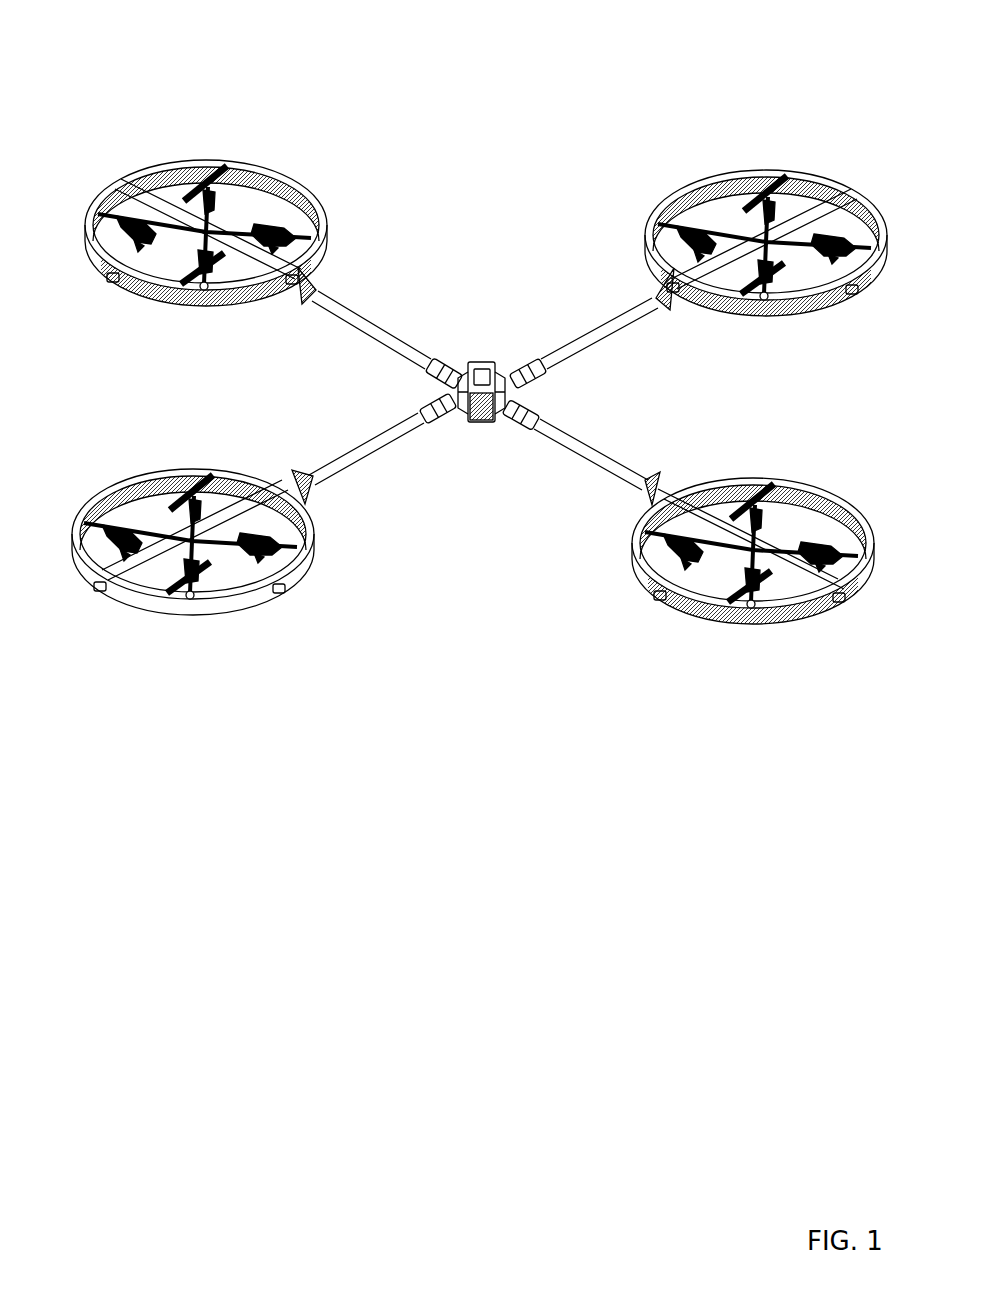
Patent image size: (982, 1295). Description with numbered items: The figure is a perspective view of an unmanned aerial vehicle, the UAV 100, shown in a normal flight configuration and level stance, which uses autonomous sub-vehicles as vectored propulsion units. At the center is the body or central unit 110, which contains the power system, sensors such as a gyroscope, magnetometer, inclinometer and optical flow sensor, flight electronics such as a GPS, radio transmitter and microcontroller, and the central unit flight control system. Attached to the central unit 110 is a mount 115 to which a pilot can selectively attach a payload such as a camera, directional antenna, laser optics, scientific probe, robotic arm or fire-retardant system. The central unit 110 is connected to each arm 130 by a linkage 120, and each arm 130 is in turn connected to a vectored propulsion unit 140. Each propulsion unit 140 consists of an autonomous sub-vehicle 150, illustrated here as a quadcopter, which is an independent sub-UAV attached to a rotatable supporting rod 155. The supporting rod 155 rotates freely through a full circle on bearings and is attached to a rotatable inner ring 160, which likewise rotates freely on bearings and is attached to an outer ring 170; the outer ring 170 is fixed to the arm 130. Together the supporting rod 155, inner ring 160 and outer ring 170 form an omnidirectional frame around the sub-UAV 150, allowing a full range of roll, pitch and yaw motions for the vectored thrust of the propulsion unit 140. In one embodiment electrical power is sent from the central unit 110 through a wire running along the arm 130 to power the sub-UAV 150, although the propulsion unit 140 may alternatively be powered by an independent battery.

The UAV 100 is at (551, 112).
The central unit 110 is at (486, 311).
The mount 115 is at (486, 378).
The linkage 120 is at (418, 388).
The arm 130 is at (380, 448).
The vectored propulsion unit 140 is at (80, 421).
The autonomous sub-vehicle 150 is at (146, 518).
The supporting rod 155 is at (135, 572).
The inner ring 160 is at (250, 608).
The outer ring 170 is at (314, 561).